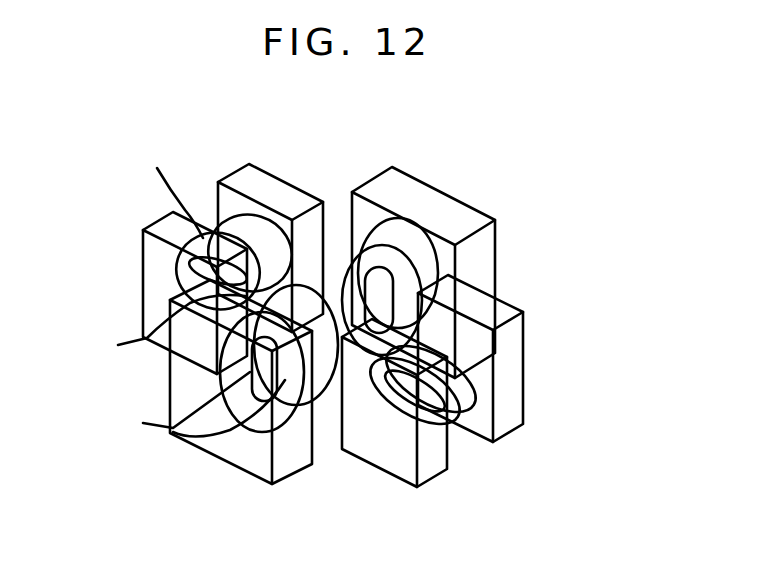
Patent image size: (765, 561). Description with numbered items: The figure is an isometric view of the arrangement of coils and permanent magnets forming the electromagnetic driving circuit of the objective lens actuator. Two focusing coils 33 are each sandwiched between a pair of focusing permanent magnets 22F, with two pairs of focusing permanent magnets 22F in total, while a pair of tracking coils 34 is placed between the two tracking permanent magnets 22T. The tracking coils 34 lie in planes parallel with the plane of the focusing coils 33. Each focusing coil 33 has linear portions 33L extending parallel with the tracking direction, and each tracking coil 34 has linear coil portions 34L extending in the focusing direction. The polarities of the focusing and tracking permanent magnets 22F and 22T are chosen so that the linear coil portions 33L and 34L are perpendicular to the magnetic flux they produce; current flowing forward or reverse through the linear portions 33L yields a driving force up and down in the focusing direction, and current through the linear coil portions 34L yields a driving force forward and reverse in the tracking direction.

The focusing permanent magnet 22F is at (150, 257).
The tracking permanent magnet 22T is at (232, 460).
The focusing coil 33 is at (217, 212).
The tracking coil 34 is at (367, 212).
The linear portion of focusing coil 33L is at (156, 250).
The linear coil portion of tracking coil 34L is at (190, 405).